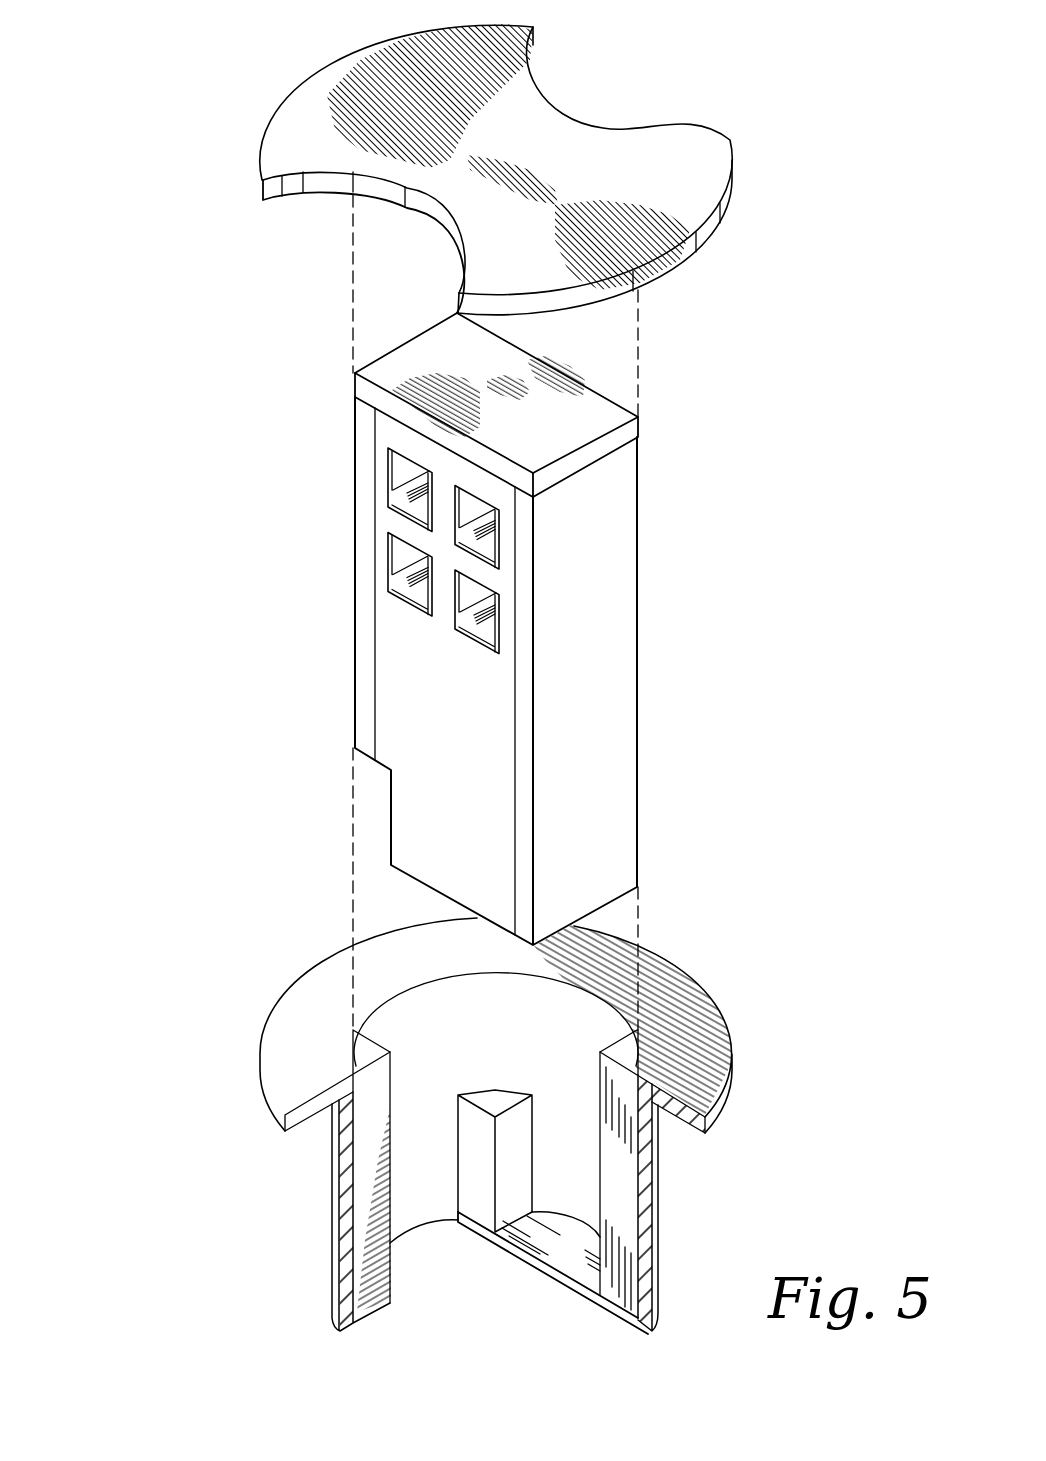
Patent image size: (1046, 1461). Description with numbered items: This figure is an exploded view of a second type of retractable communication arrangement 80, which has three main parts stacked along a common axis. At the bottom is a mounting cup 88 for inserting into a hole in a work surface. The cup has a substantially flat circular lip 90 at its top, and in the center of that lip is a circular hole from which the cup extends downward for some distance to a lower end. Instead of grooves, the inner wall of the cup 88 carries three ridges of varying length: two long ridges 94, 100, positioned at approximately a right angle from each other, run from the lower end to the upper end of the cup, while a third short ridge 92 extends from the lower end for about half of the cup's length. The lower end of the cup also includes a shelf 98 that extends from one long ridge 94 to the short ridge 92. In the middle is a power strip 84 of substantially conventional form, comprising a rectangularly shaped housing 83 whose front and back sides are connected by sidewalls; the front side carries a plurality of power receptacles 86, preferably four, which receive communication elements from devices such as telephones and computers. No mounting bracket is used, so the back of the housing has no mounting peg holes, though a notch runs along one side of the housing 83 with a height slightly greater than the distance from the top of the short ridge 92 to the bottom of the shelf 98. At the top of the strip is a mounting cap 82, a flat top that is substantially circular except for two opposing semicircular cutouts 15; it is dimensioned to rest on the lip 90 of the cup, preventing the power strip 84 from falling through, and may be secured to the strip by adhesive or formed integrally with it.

The retractable communication arrangement 80 is at (150, 212).
The mounting cap 82 is at (503, 97).
The semicircular cutouts 15 is at (428, 205).
The housing 83 is at (612, 636).
The power strip 84 is at (437, 735).
The power receptacles 86 is at (403, 473).
The mounting cup 88 is at (333, 1203).
The circular lip 90 is at (303, 999).
The short ridge 92 is at (488, 1092).
The long ridge 94 is at (613, 1163).
The shelf 98 is at (553, 1252).
The long ridge 100 is at (377, 1096).